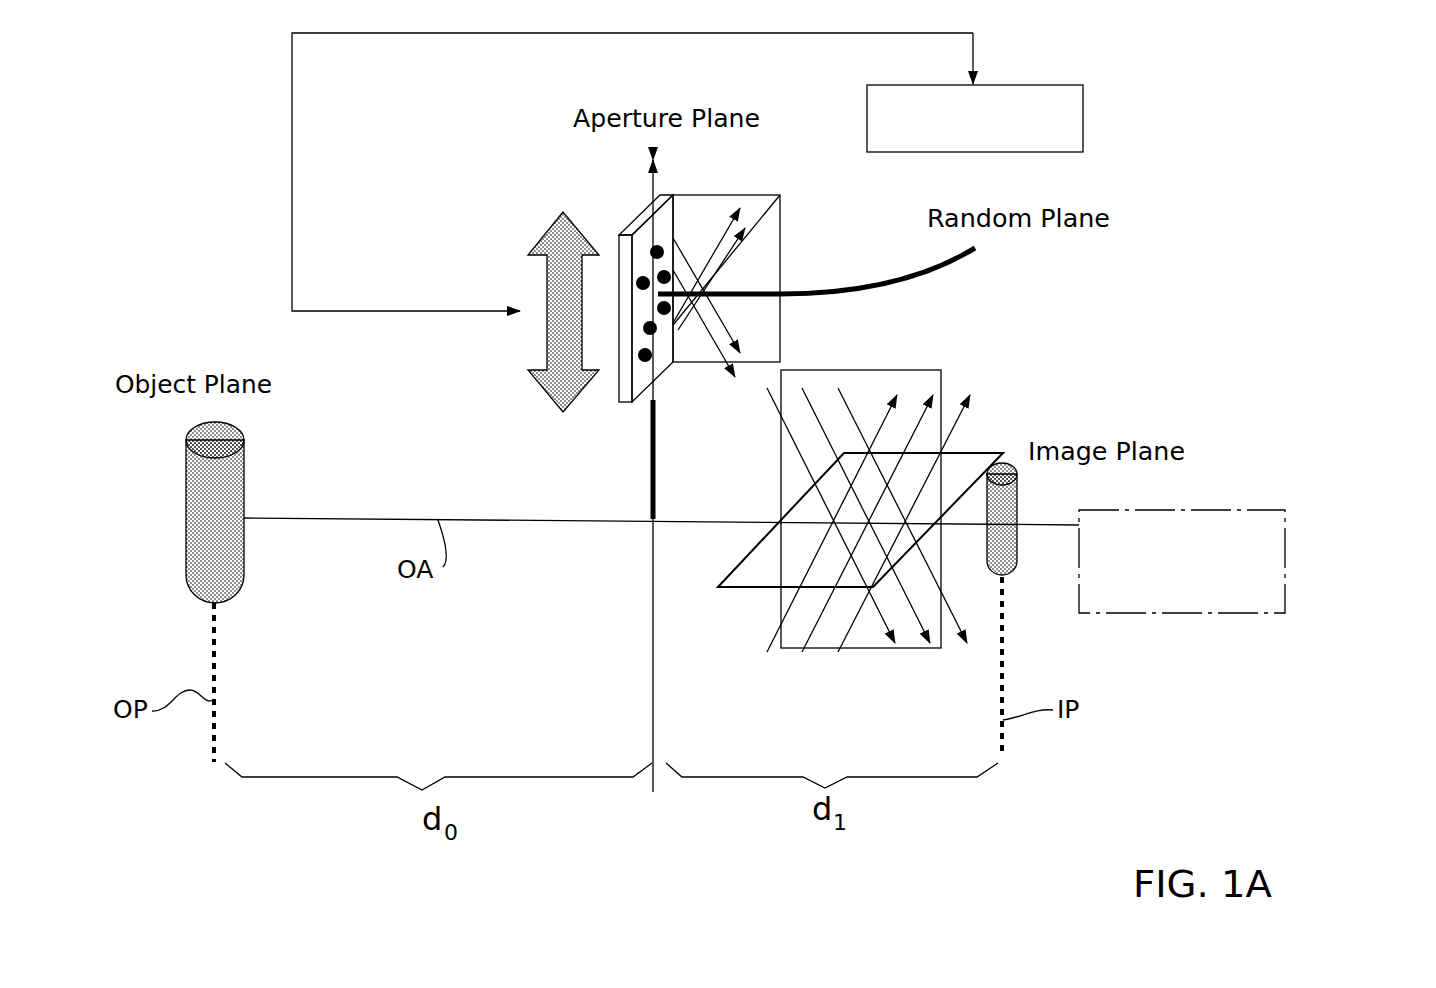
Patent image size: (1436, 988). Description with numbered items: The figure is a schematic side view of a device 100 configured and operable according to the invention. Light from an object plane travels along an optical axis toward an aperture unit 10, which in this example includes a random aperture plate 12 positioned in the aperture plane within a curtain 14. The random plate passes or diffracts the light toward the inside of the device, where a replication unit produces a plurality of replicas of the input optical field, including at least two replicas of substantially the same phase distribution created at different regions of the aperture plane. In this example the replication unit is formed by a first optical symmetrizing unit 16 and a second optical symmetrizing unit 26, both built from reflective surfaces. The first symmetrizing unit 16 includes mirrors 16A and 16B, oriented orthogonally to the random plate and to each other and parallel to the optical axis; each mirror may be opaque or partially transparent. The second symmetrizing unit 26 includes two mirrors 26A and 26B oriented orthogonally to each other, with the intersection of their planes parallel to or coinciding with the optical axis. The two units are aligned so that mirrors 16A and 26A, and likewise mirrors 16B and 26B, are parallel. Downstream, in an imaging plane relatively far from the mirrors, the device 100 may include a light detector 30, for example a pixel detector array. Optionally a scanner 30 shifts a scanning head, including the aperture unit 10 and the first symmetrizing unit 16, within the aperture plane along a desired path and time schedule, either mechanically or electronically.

The aperture unit 10 is at (614, 418).
The random aperture plate 12 is at (635, 222).
The curtain 14 is at (652, 467).
The first optical symmetrizing unit 16 is at (799, 260).
The mirror 16A is at (718, 210).
The mirror 16B is at (786, 256).
The second optical symmetrizing unit 26 is at (866, 499).
The mirror 26A is at (891, 370).
The mirror 26B is at (975, 453).
The light detector / scanner 30 is at (1083, 136).
The device 100 is at (1253, 193).